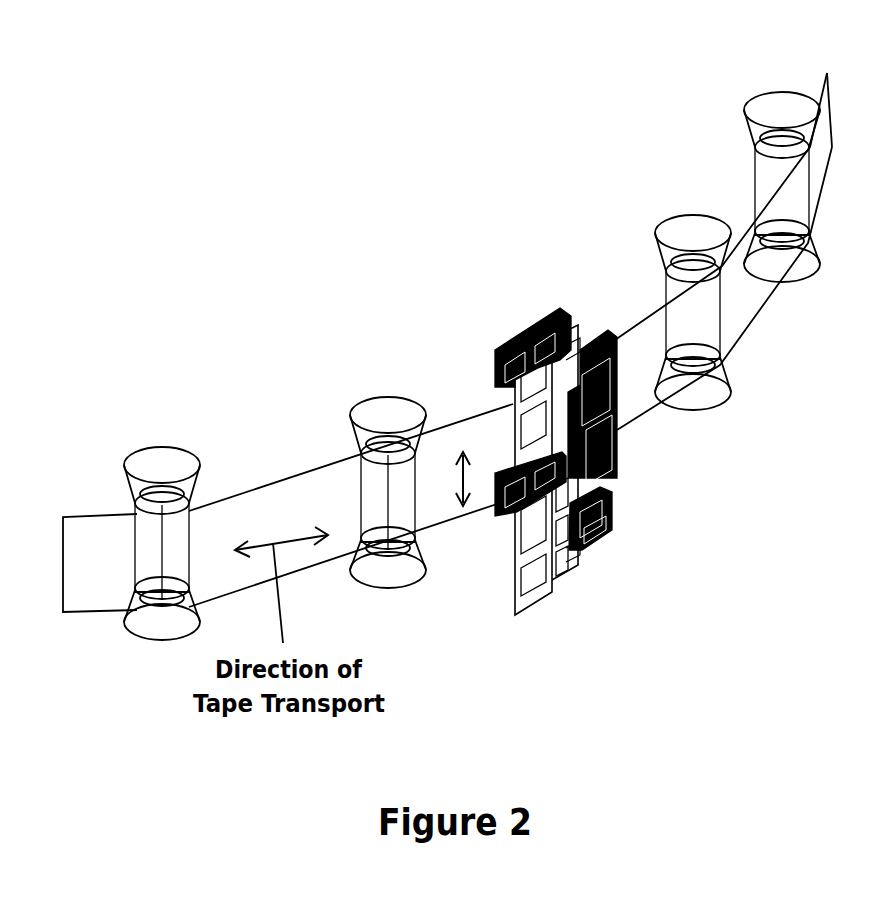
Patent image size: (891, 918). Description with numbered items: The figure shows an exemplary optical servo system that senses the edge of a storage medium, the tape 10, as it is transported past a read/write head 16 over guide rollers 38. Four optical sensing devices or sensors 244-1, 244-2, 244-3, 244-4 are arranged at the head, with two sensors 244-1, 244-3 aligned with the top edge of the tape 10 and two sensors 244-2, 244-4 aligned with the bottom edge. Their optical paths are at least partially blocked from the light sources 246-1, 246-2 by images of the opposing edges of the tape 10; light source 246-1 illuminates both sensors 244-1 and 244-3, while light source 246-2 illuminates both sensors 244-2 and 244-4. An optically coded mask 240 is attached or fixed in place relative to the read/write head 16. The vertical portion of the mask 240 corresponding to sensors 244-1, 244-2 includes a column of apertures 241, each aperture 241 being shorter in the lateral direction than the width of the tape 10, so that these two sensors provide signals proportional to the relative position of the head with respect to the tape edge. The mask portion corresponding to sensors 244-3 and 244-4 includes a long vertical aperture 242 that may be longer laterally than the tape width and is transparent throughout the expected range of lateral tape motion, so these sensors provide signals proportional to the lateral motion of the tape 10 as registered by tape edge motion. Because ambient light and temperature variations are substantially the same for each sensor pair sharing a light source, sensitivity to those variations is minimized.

The tape 10 is at (73, 525).
The tape guide roller 38 is at (777, 100).
The read/write head 16 is at (615, 363).
The optically coded mask 240 is at (513, 398).
The long vertical aperture 242 is at (505, 410).
The aperture 241 is at (570, 345).
The optical sensing device 244-1 is at (570, 313).
The optical sensing device 244-2 is at (564, 552).
The optical sensing device 244-3 is at (497, 347).
The optical sensing device 244-4 is at (515, 516).
The light source 246-1 is at (617, 430).
The light source 246-2 is at (607, 532).